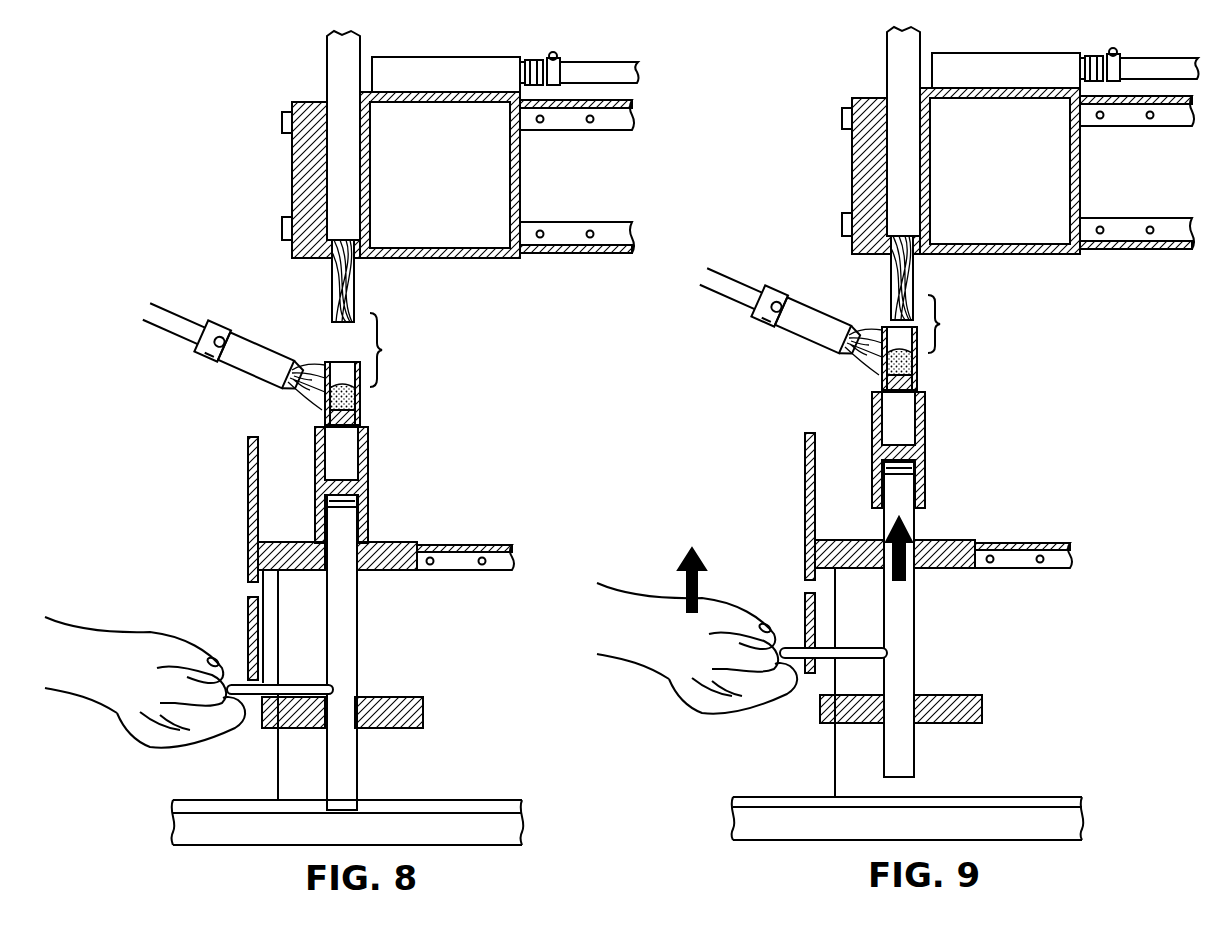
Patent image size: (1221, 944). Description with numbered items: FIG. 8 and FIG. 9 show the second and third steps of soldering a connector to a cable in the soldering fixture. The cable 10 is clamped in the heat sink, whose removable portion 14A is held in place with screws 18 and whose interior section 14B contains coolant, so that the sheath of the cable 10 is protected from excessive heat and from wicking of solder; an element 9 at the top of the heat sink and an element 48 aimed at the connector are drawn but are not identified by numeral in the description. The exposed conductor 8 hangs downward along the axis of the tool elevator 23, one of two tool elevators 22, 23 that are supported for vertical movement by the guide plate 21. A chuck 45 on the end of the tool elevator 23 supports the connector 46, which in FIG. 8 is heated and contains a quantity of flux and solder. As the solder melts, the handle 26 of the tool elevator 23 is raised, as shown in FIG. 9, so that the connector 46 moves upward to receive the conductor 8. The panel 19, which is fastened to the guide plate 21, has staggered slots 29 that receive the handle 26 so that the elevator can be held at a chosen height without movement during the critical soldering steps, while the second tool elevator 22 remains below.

In FIG. 8, the conductor 8 is at (352, 288).
In FIG. 9, the conductor 8 is at (912, 283).
In FIG. 8, the insulating sleeve 9 is at (333, 67).
In FIG. 9, the insulating sleeve 9 is at (893, 63).
In FIG. 8, the cable 10 is at (478, 802).
In FIG. 9, the cable 10 is at (1033, 800).
In FIG. 8, the removable portion of the heat sink 14A is at (305, 260).
In FIG. 9, the removable portion of the heat sink 14A is at (866, 254).
In FIG. 8, the interior section of the heat sink 14B is at (452, 253).
In FIG. 9, the interior section of the heat sink 14B is at (1020, 253).
In FIG. 8, the screws 18 is at (282, 122).
In FIG. 9, the screws 18 is at (842, 118).
In FIG. 8, the panel 19 is at (248, 513).
In FIG. 9, the panel 19 is at (805, 503).
In FIG. 8, the guide plate 21 is at (455, 572).
In FIG. 9, the guide plate 21 is at (967, 568).
In FIG. 8, the tool elevator 22 is at (425, 712).
In FIG. 9, the tool elevator 22 is at (985, 708).
In FIG. 8, the tool elevator 23 is at (357, 608).
In FIG. 9, the tool elevator 23 is at (915, 645).
In FIG. 8, the handle 26 is at (252, 700).
In FIG. 9, the handle 26 is at (810, 674).
In FIG. 8, the staggered slots 29 is at (246, 596).
In FIG. 8, the chuck 45 is at (368, 460).
In FIG. 9, the chuck 45 is at (928, 438).
In FIG. 8, the connector 46 is at (360, 400).
In FIG. 9, the connector 46 is at (918, 363).
In FIG. 9, the torch 48 is at (790, 334).